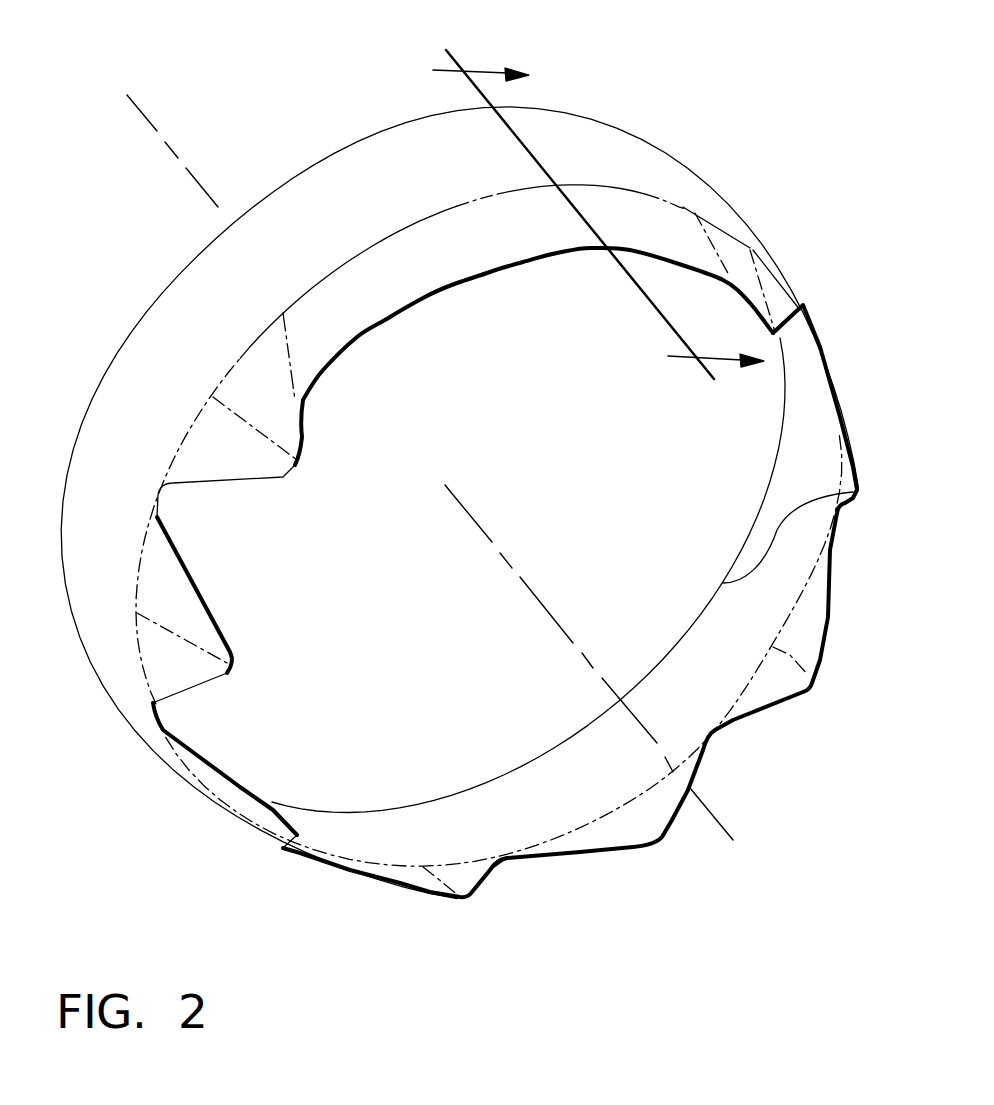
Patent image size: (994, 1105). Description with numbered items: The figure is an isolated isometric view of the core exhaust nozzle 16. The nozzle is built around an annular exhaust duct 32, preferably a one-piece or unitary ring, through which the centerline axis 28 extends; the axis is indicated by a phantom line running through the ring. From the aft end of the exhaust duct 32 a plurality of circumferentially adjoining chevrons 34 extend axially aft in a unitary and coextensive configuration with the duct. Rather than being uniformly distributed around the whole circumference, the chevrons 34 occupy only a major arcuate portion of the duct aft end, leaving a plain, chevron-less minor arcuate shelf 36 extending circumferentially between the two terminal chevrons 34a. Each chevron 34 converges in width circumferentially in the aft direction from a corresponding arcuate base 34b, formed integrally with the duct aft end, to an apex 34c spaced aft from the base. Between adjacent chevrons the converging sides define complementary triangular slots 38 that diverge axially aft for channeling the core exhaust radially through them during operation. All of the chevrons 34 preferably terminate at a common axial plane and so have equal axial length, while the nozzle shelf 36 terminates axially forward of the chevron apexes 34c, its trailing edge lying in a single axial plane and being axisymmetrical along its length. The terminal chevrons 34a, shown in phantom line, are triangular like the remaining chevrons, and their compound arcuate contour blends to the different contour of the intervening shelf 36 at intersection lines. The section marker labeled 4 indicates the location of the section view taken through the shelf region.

The core exhaust nozzle 16 is at (686, 72).
The centerline axis 28 is at (717, 818).
The annular exhaust duct 32 is at (393, 162).
The chevrons 34 is at (810, 680).
The terminal chevrons 34a is at (274, 462).
The arcuate base 34b is at (227, 373).
The apex 34c is at (657, 838).
The nozzle shelf 36 is at (407, 272).
The triangular slots 38 is at (227, 547).
The section line 4- 4 is at (598, 216).